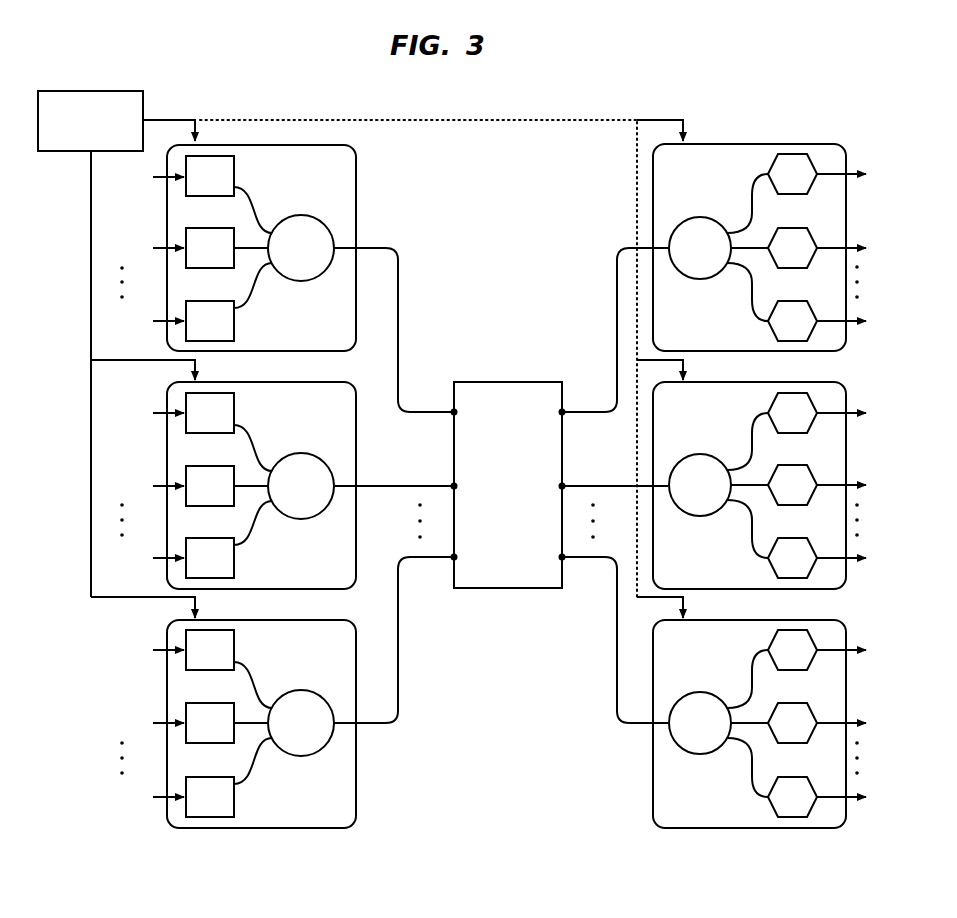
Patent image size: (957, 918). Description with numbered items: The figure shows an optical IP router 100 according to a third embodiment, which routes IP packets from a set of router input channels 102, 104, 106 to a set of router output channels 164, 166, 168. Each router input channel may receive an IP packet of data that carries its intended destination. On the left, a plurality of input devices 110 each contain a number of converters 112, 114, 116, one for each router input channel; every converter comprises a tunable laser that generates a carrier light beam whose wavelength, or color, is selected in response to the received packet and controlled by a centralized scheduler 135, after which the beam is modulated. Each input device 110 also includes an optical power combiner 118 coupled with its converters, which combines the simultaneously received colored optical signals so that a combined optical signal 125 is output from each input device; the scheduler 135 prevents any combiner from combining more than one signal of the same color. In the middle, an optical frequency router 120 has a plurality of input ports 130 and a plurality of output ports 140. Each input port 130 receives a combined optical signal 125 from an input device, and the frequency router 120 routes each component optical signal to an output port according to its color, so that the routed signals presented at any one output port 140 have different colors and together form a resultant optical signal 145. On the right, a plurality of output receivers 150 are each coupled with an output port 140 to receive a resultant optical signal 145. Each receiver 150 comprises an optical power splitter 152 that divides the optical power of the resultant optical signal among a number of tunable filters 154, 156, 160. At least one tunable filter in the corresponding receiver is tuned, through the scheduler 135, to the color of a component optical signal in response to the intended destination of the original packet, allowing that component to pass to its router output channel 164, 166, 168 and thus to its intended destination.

The optical IP router 100 is at (531, 102).
The router input channels 102 is at (142, 252).
The router input channels 104 is at (142, 489).
The router input channels 106 is at (142, 727).
The input devices 110 is at (357, 204).
The converters 112 is at (236, 164).
The converters 114 is at (236, 401).
The converters 116 is at (236, 639).
The optical power combiner 118 is at (304, 281).
The optical frequency router 120 is at (497, 579).
The combined optical signals 125 is at (400, 291).
The input ports 130 is at (432, 595).
The centralized scheduler 135 is at (360, 354).
The output ports 140 is at (585, 595).
The resultant optical signals 145 is at (616, 684).
The output receivers 150 is at (846, 145).
The optical power splitter 152 is at (693, 769).
The tunable filters 154 is at (793, 300).
The tunable filters 156 is at (793, 537).
The tunable filters 160 is at (793, 776).
The router output channels 164 is at (866, 250).
The router output channels 166 is at (866, 488).
The router output channels 168 is at (866, 726).